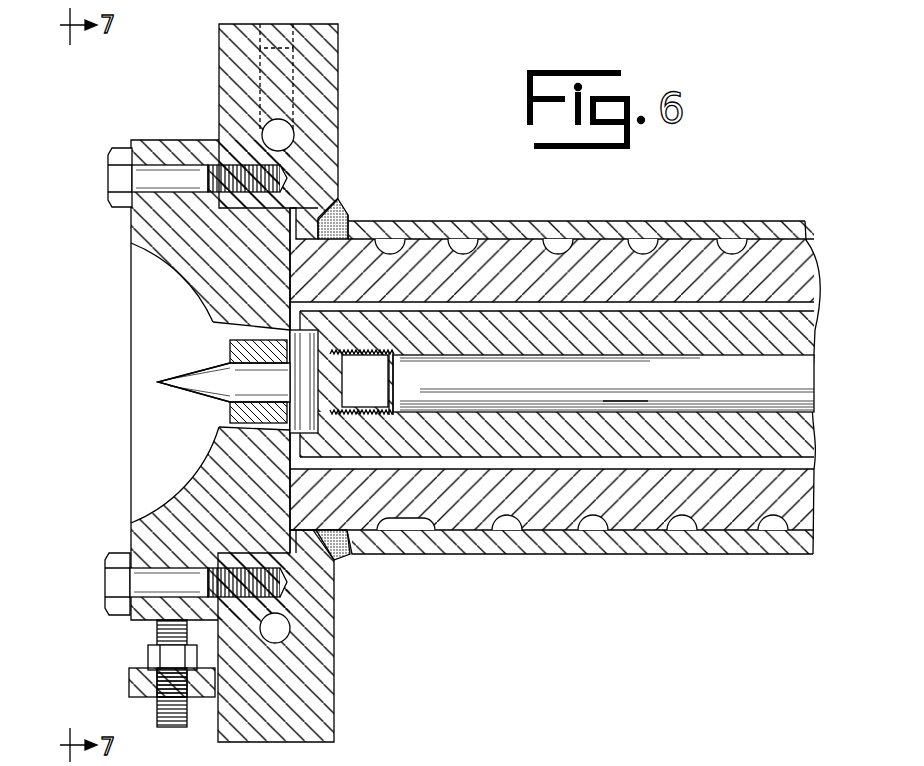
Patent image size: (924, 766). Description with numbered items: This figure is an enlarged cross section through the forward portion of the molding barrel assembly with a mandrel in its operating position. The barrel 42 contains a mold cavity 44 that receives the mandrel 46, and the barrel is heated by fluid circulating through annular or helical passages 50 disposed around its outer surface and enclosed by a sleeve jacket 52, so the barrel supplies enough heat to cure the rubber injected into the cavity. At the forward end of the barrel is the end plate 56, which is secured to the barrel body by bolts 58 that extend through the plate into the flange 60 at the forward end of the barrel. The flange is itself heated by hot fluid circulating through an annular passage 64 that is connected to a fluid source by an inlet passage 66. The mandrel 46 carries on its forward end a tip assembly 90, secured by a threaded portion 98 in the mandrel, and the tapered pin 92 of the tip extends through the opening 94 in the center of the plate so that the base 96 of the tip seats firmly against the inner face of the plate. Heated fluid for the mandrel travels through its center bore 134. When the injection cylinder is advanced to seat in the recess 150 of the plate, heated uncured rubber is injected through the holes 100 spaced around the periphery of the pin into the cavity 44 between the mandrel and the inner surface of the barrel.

The barrel 42 is at (775, 258).
The mold cavity 44 is at (808, 310).
The mandrel 46 is at (800, 340).
The annular or helical passages 50 is at (643, 250).
The sleeve jacket 52 is at (541, 224).
The forward end plate 56 is at (170, 257).
The bolts 58 is at (113, 178).
The flange 60 is at (330, 146).
The annular passage 64 is at (283, 633).
The inlet passage 66 is at (288, 30).
The tip assembly 90 is at (148, 383).
The tapered pin 92 is at (217, 402).
The opening 94 is at (224, 418).
The base 96 is at (306, 381).
The threaded portion 98 is at (398, 358).
The holes 100 is at (230, 346).
The center bore 134 is at (628, 389).
The recess 150 is at (138, 318).